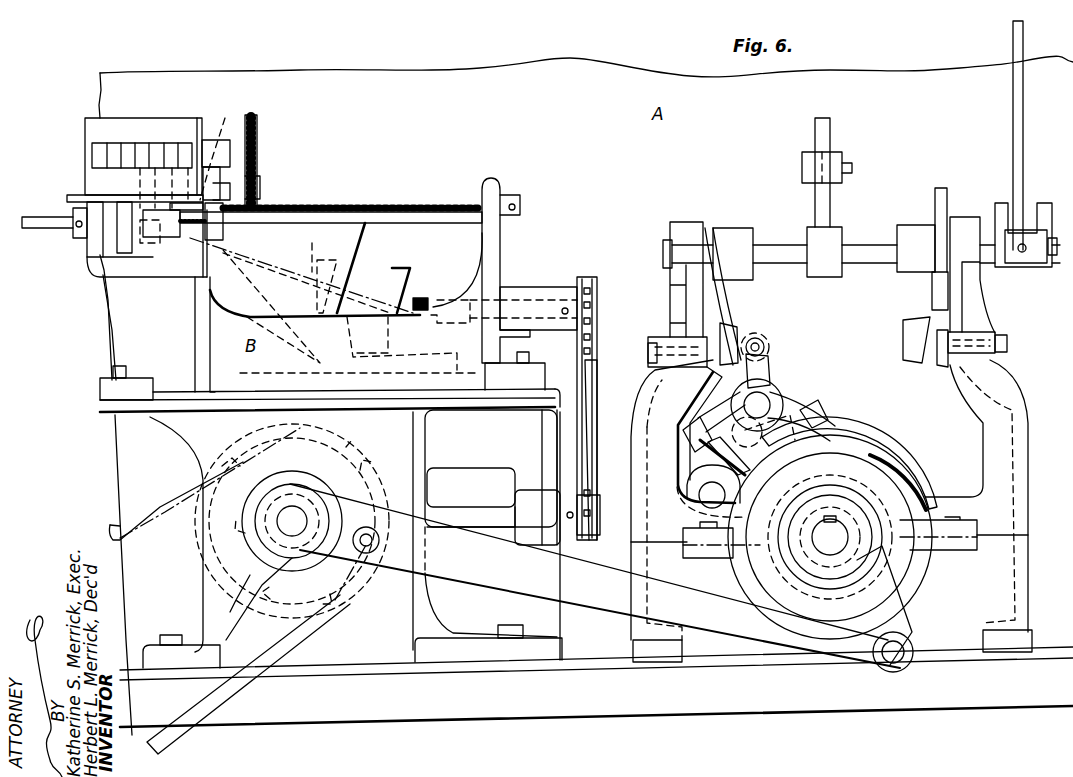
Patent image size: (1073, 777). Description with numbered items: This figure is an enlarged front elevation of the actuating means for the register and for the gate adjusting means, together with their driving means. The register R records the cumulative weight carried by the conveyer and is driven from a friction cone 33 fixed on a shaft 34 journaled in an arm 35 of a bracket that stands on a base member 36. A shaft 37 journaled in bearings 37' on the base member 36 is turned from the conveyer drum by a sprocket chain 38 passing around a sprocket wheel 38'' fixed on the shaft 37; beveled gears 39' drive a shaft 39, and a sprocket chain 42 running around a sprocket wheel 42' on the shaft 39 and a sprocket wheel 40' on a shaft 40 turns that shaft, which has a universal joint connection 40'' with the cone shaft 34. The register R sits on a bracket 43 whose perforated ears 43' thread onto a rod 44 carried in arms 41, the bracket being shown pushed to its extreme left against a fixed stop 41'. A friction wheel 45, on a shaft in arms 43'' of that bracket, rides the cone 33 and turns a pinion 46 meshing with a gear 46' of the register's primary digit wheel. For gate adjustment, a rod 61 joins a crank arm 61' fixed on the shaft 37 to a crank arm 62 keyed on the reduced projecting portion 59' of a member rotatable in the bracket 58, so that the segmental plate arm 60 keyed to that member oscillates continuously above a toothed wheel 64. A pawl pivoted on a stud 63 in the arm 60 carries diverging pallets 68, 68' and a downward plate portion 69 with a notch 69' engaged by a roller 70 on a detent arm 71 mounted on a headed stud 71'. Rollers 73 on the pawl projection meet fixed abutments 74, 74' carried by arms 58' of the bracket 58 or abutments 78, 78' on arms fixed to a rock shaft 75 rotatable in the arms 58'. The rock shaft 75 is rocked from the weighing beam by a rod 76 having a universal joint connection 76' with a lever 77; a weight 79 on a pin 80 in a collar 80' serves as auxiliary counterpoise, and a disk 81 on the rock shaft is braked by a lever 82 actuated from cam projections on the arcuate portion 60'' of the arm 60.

The register R is at (170, 125).
The friction wheel 45 is at (224, 146).
The gear 46' is at (276, 161).
The pinion 46 is at (253, 170).
The bracket 43 is at (54, 208).
The arms 43'' is at (201, 205).
The perforated ears 43' is at (301, 258).
The arms 41 is at (291, 260).
The fixed stop 41' is at (127, 297).
The rod 44 is at (335, 210).
The shaft 34 is at (321, 273).
The friction cone 33 is at (355, 236).
The arm 35 is at (408, 265).
The universal joint connection 40'' is at (441, 292).
The shaft 40 is at (523, 286).
The sprocket wheel 40' is at (602, 408).
The sprocket chain 42 is at (587, 452).
The sprocket wheel 42' is at (571, 509).
The base member 36 is at (425, 440).
The shaft 39 is at (492, 536).
The shaft 37 is at (299, 494).
The sprocket chain 38 is at (292, 540).
The sprocket wheel 38'' is at (269, 521).
The bearings 37' is at (236, 596).
The beveled gears 39' is at (253, 484).
The crank arm 61' is at (271, 640).
The rod 61 is at (569, 578).
The bracket 58 is at (850, 500).
The reduced axial projecting portion 59' is at (830, 537).
The crank arm 62 is at (905, 628).
The arcuate portion 60'' is at (849, 455).
The toothed wheel 64 is at (905, 465).
The segmental plate arm 60 is at (775, 407).
The stud 63 is at (765, 397).
The rollers 73 is at (768, 340).
The abutment 78 is at (735, 296).
The abutment 78' is at (838, 337).
The fixed abutment 74 is at (691, 362).
The fixed abutment 74' is at (959, 368).
The pallet 68 is at (680, 436).
The plate portion 69 is at (716, 457).
The notch 69' is at (750, 433).
The roller 70 is at (770, 432).
The detent arm 71 is at (729, 456).
The headed stud 71' is at (703, 496).
The pallet 68' is at (837, 410).
The arms 58' is at (830, 275).
The rock shaft 75 is at (782, 243).
The collar 80' is at (847, 241).
The pin 80 is at (847, 172).
The weight 79 is at (845, 155).
The disk 81 is at (940, 186).
The lever 82 is at (925, 285).
The rod 76 is at (1038, 135).
The lever 77 is at (1000, 210).
The universal joint connection 76' is at (1048, 272).